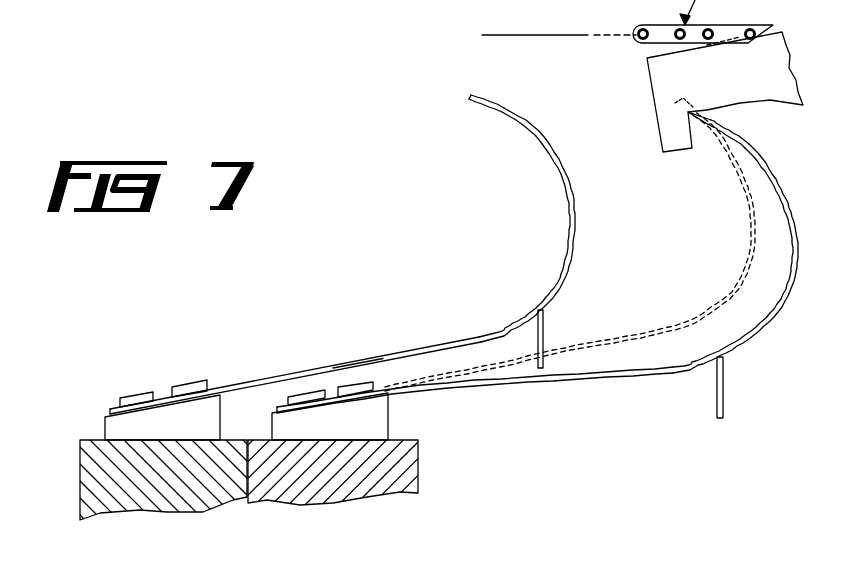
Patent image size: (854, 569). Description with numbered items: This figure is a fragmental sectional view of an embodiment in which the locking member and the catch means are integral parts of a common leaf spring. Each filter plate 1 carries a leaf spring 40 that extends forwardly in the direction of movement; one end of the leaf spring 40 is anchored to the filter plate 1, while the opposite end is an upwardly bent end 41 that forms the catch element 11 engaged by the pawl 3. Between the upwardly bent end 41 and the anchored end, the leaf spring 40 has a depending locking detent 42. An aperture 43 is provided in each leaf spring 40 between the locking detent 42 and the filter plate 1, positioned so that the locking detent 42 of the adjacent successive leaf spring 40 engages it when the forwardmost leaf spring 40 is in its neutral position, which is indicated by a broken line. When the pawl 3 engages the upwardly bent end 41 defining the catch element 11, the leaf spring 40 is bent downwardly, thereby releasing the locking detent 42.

The filter plate 1 is at (80, 495).
The pawl 3 is at (769, 100).
The catch element 11 is at (469, 96).
The leaf spring 40 is at (265, 380).
The upwardly bent end 41 is at (553, 172).
The locking detent 42 is at (545, 337).
The aperture 43 is at (381, 359).